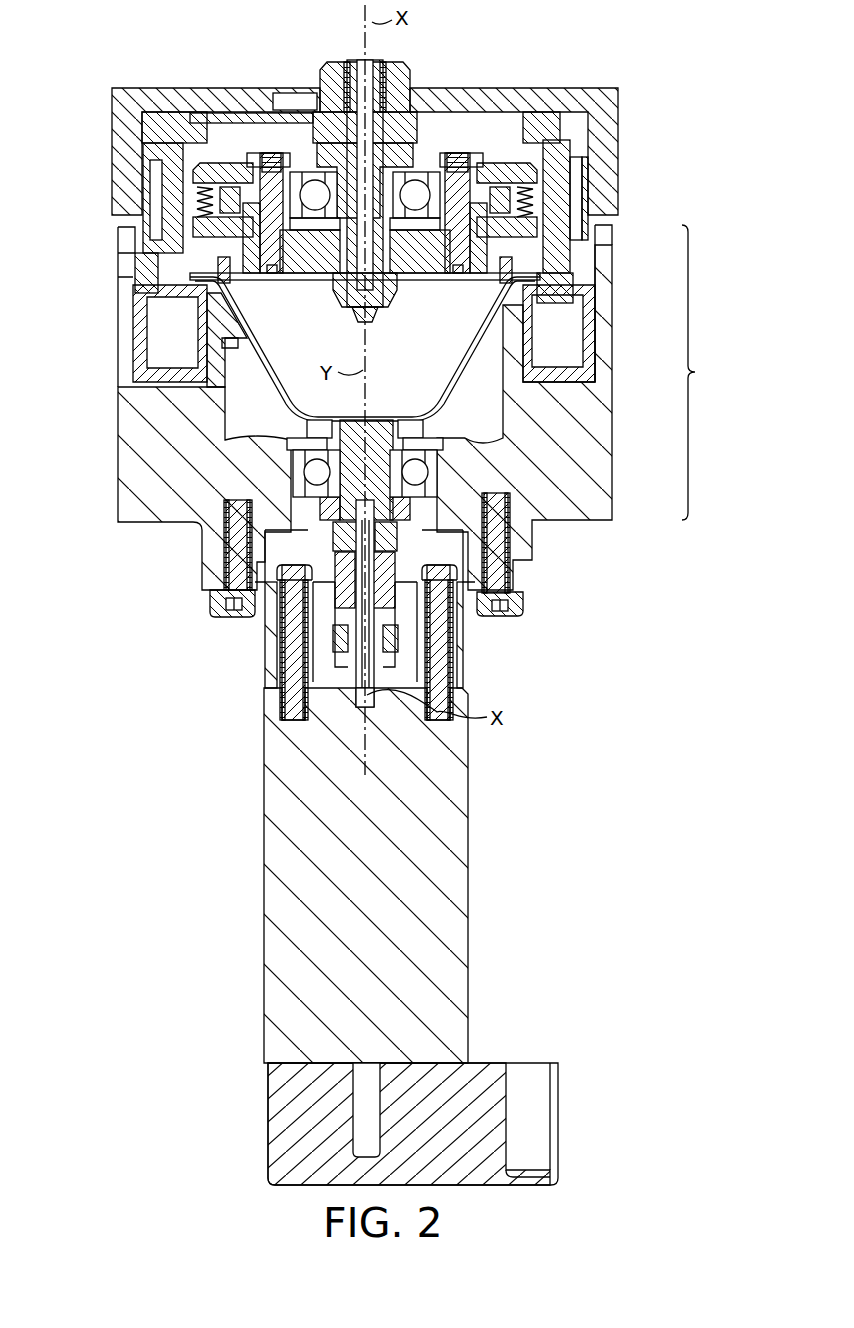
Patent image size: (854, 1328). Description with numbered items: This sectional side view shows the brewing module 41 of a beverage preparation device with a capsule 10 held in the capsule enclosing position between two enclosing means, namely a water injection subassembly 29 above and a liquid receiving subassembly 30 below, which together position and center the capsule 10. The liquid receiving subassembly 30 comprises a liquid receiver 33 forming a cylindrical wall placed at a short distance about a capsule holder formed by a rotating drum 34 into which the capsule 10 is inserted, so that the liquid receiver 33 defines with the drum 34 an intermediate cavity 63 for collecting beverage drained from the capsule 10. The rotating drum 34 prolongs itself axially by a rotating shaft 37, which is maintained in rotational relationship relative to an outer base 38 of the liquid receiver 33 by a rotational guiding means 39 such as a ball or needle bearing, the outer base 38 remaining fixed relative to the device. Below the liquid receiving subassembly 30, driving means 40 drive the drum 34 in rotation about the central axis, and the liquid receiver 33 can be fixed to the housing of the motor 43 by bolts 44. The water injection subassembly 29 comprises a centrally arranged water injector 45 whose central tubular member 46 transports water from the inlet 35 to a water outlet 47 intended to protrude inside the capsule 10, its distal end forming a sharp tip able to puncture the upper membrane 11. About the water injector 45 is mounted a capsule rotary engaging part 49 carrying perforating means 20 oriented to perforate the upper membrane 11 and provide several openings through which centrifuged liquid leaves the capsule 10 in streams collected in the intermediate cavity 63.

The capsule 10 is at (252, 372).
The upper membrane 11 is at (465, 282).
The perforating means 20 is at (217, 260).
The water injection subassembly 29 is at (97, 88).
The liquid receiving subassembly 30 is at (703, 372).
The liquid receiver 33 is at (616, 420).
The rotating drum 34 is at (225, 393).
The inlet 35 is at (360, 62).
The rotating shaft 37 is at (373, 420).
The outer base 38 is at (600, 506).
The rotational guiding means 39 is at (297, 445).
The driving means 40 is at (470, 790).
The brewing module 41 is at (634, 101).
The housing of the motor 43 is at (470, 630).
The bolts 44 is at (208, 603).
The water injector 45 is at (404, 69).
The central tubular member 46 is at (398, 150).
The water outlet 47 is at (392, 312).
The capsule rotary engaging part 49 is at (535, 230).
The intermediate cavity 63 is at (572, 345).